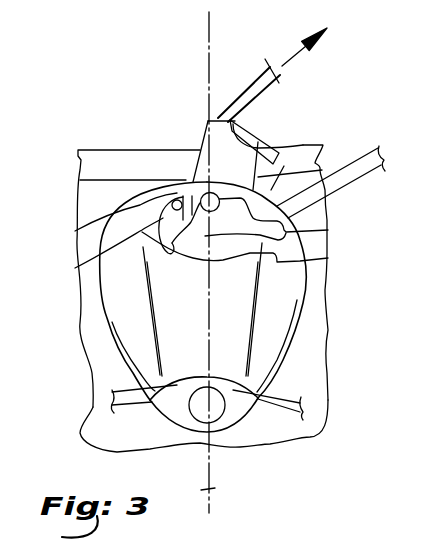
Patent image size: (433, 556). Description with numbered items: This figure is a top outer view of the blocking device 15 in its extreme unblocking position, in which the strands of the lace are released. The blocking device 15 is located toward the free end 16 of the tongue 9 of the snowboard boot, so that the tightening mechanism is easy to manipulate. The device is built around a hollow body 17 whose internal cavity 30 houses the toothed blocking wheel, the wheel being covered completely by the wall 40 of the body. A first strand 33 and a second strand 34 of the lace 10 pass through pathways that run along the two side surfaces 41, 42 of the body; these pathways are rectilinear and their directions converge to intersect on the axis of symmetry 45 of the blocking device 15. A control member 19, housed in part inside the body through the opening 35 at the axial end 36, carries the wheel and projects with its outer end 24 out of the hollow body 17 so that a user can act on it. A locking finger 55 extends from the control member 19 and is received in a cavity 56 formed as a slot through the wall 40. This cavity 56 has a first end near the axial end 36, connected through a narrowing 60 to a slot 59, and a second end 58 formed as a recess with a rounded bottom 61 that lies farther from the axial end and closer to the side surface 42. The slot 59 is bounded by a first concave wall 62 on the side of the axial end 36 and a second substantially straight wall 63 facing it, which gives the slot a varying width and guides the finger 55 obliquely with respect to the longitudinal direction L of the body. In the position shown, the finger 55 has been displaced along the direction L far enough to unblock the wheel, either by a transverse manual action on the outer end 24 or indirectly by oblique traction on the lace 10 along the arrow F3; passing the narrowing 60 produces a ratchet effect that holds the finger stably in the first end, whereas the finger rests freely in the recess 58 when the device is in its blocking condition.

The longitudinal direction L is at (208, 35).
The axis of symmetry 45 is at (215, 488).
The tongue 9 is at (80, 420).
The lace 10 is at (247, 92).
The blocking device 15 is at (110, 325).
The free end 16 is at (90, 147).
The hollow body 17 is at (115, 348).
The control member 19 is at (303, 144).
The outer end 24 is at (243, 137).
The cavity 30 is at (178, 406).
The first strand 33 is at (230, 110).
The second strand 34 is at (363, 155).
The opening 35 is at (185, 158).
The axial end 36 is at (187, 188).
The wall 40 is at (273, 343).
The side surface 41 is at (307, 290).
The side surface 42 is at (113, 358).
The locking finger 55 is at (328, 198).
The cavity 56 is at (328, 258).
The second end 58 is at (75, 268).
The slot 59 is at (180, 190).
The narrowing 60 is at (328, 229).
The rounded bottom 61 is at (163, 233).
The first concave wall 62 is at (114, 181).
The second wall 63 is at (75, 231).
The arrow F3 is at (292, 63).